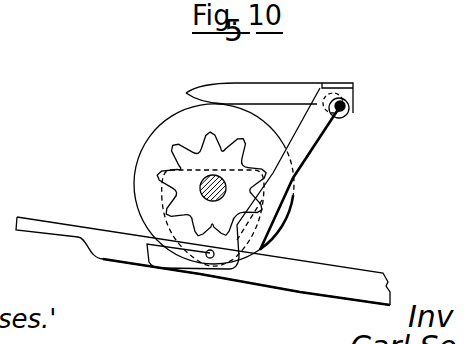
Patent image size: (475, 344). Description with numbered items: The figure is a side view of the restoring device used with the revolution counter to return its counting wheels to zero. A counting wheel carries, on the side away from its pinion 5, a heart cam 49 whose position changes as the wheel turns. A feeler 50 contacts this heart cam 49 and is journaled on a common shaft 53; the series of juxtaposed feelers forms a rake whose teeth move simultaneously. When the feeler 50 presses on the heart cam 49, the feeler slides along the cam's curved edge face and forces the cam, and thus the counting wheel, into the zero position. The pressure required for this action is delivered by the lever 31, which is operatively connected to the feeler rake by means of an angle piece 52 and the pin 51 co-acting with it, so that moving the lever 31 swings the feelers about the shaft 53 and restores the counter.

The pinion 5 is at (204, 146).
The lever 31 is at (328, 281).
The heart cam 49 is at (163, 198).
The feeler 50 is at (263, 92).
The pin 51 is at (211, 258).
The angle piece 52 is at (280, 177).
The common shaft 53 is at (345, 107).